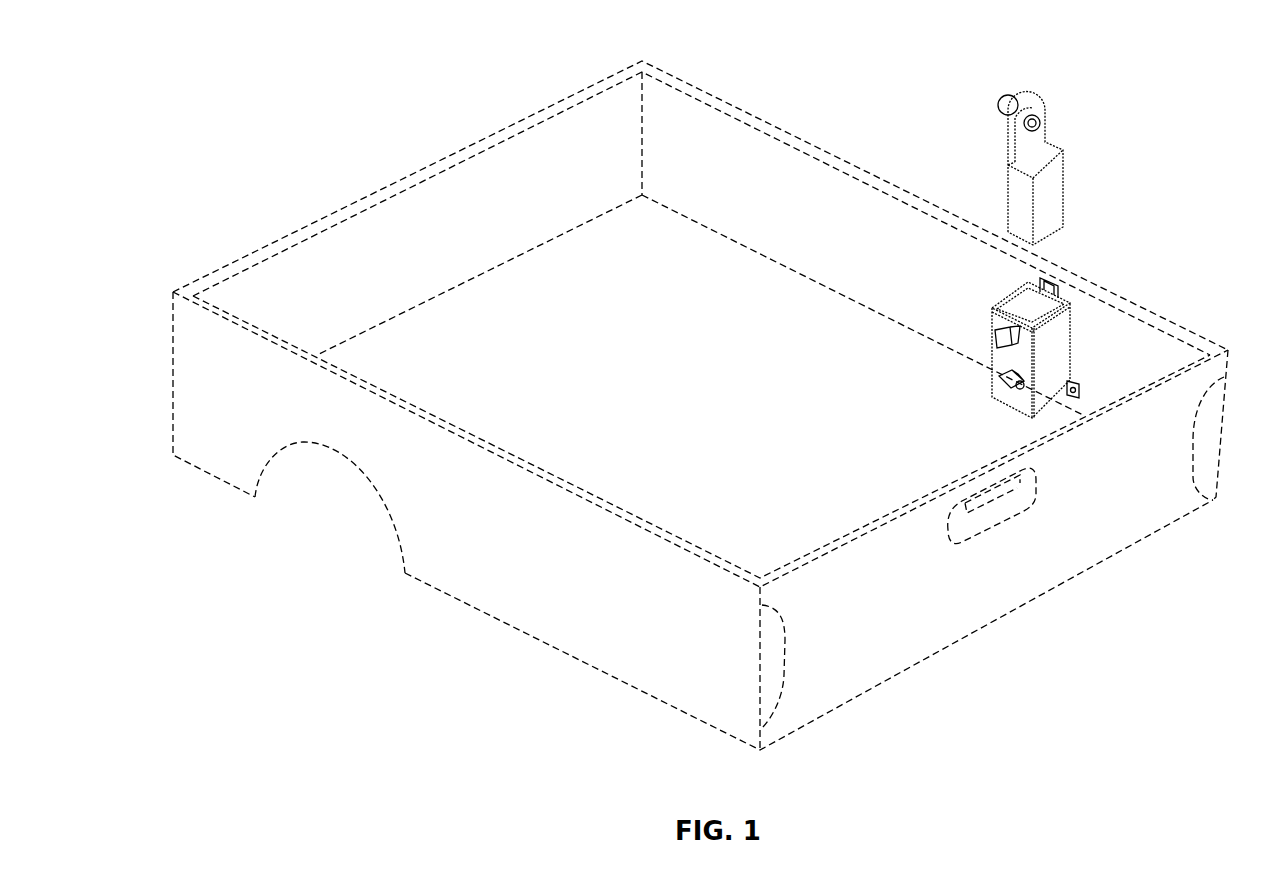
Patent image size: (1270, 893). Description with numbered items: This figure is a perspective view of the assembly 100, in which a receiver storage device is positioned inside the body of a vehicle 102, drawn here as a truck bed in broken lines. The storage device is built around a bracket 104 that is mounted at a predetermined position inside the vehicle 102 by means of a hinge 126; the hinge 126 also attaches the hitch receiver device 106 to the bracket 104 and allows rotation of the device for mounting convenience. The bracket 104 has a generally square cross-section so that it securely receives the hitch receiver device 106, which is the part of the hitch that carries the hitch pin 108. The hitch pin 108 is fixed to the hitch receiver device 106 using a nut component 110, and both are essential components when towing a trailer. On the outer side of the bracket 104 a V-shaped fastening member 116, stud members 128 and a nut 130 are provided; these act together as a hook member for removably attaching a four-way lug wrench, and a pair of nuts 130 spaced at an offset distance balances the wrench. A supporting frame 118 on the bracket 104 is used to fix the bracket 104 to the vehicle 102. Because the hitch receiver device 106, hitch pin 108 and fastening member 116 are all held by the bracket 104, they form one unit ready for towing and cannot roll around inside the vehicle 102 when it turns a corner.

The assembly 100 is at (236, 58).
The vehicle 102 is at (168, 325).
The bracket 104 is at (1072, 362).
The hitch receiver device 106 is at (1016, 206).
The hitch pin 108 is at (998, 114).
The nut component 110 is at (1040, 121).
The V-shaped fastening member 116 is at (994, 333).
The supporting frame 118 is at (1080, 392).
The hinge 126 is at (1050, 279).
The stud members 128 is at (998, 378).
The nut 130 is at (1020, 394).